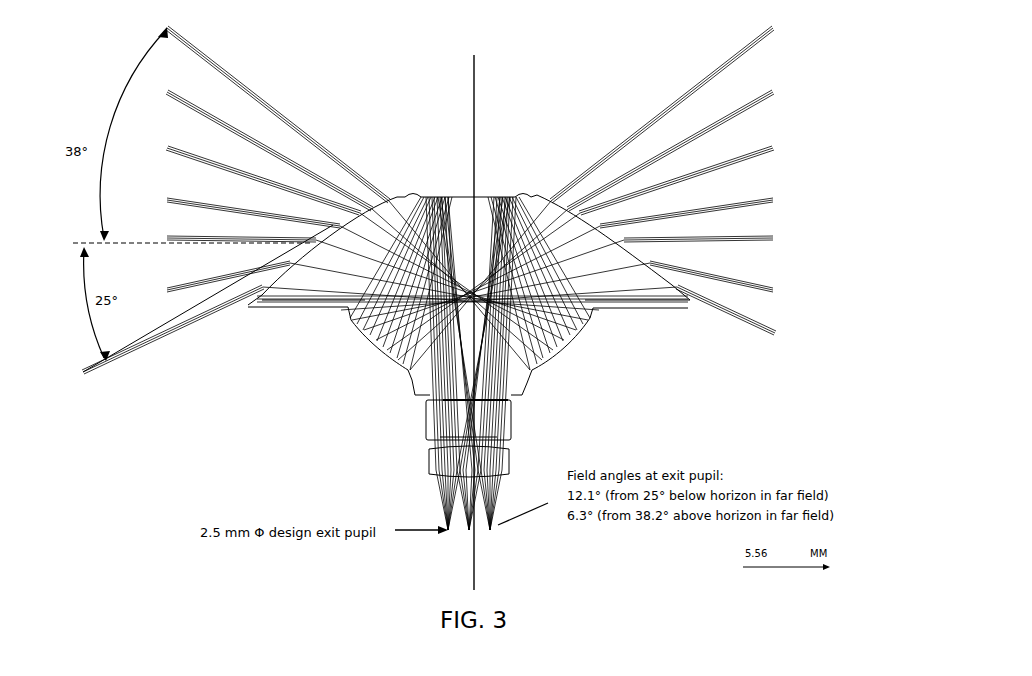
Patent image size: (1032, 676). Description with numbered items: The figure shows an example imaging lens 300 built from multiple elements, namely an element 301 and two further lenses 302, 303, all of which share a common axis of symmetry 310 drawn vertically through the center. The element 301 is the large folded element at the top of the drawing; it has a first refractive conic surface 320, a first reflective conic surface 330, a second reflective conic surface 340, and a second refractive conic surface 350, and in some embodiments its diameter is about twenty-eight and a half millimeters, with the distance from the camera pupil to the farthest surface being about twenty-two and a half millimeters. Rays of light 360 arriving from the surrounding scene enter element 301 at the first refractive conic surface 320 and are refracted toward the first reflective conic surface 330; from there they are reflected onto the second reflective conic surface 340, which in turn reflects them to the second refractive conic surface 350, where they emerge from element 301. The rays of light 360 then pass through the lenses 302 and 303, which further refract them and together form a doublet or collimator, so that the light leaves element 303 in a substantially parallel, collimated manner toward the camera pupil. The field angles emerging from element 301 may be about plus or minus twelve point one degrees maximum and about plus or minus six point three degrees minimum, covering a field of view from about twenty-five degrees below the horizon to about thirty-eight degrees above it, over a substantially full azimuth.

The imaging lens 300 is at (228, 400).
The element 301 is at (300, 307).
The lens 302 is at (510, 427).
The lens 303 is at (510, 466).
The axis of symmetry 310 is at (474, 165).
The first refractive conic surface 320 is at (395, 197).
The first reflective conic surface 330 is at (573, 345).
The second reflective conic surface 340 is at (507, 192).
The second refractive conic surface 350 is at (430, 400).
The rays of light 360 is at (285, 118).